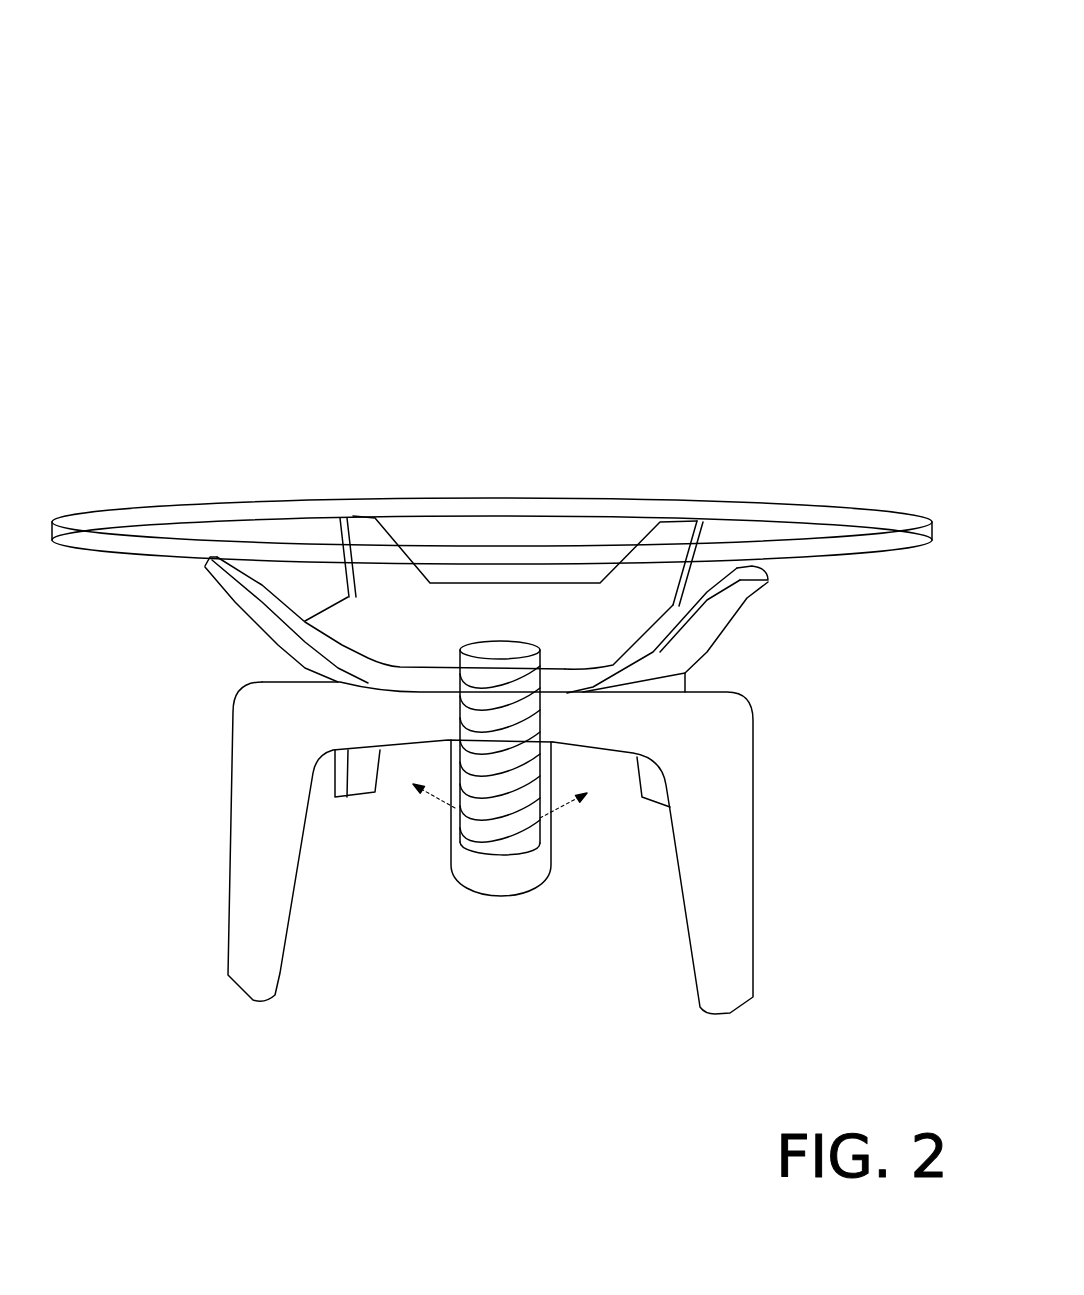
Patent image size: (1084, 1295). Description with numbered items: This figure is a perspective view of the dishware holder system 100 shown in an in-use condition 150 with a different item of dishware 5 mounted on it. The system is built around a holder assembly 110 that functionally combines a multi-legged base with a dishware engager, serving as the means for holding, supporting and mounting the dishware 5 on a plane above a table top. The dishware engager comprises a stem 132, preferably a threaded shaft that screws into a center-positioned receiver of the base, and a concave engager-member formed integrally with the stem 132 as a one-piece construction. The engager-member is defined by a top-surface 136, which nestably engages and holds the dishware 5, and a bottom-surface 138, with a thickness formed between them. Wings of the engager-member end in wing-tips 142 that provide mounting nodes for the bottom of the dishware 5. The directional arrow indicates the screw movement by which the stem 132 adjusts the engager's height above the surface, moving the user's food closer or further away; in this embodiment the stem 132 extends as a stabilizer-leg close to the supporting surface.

The dishware 5 is at (798, 496).
The dishware holder system 100 is at (708, 100).
The in-use condition 150 is at (738, 158).
The holder assembly 110 is at (760, 628).
The stem 132 is at (505, 862).
The top-surface 136 is at (398, 630).
The bottom-surface 138 is at (700, 648).
The wing-tips 142 is at (208, 552).